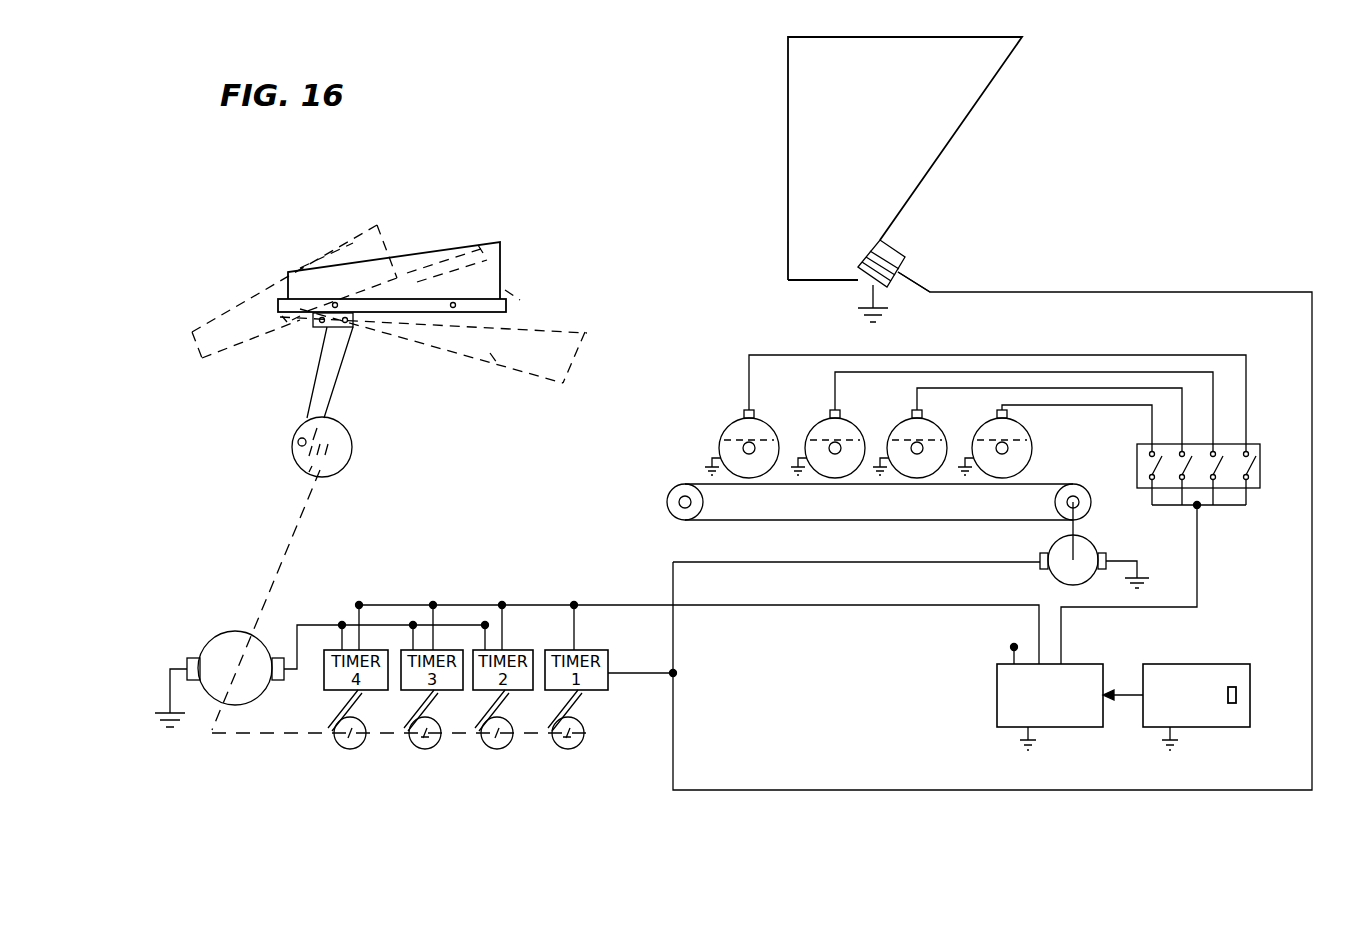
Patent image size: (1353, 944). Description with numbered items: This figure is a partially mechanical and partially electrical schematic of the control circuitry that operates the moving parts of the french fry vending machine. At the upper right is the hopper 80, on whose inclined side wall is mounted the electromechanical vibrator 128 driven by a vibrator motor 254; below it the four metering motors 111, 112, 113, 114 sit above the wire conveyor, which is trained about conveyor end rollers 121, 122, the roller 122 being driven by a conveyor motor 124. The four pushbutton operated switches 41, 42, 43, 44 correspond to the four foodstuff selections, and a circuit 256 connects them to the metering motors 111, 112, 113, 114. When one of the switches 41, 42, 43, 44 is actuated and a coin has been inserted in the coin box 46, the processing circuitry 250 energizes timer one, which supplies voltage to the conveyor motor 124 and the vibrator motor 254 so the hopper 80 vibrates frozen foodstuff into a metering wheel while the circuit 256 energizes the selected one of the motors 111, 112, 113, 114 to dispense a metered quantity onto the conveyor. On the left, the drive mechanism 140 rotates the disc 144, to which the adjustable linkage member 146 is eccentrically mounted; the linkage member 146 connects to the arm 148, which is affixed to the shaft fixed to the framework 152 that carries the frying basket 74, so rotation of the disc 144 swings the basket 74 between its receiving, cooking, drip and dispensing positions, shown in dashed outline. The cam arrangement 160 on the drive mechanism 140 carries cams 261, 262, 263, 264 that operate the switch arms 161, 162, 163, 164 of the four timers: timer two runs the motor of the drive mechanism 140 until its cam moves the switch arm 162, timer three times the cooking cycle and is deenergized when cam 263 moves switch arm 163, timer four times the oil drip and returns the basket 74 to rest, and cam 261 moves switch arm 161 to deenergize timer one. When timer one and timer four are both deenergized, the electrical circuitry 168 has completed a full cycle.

The frying basket 74 is at (505, 290).
The framework 152 is at (507, 306).
The arm 148 is at (323, 330).
The adjustable linkage member 146 is at (340, 370).
The disc 144 is at (352, 452).
The drive mechanism 140 is at (207, 650).
The cam arrangement 160 is at (286, 746).
The switch arm 164 is at (340, 702).
The cam 264 is at (338, 746).
The switch arm 163 is at (410, 705).
The cam 263 is at (426, 748).
The switch arm 162 is at (478, 706).
The cam 262 is at (497, 750).
The switch arm 161 is at (575, 702).
The cam 261 is at (573, 748).
The electrical circuitry 168 is at (662, 783).
The hopper 80 is at (947, 135).
The electromechanical vibrator 128 is at (906, 262).
The vibrator motor 254 is at (895, 246).
The motor 111 is at (730, 425).
The motor 112 is at (818, 426).
The motor 113 is at (900, 426).
The motor 114 is at (984, 426).
The conveyor end roller 121 is at (668, 512).
The conveyor end roller 122 is at (1087, 510).
The conveyor motor 124 is at (1057, 572).
The pushbutton operated switch 41 is at (1216, 489).
The pushbutton operated switch 42 is at (1225, 484).
The pushbutton operated switch 43 is at (1192, 483).
The pushbutton operated switch 44 is at (1162, 483).
The circuit 256 is at (1200, 582).
The processing circuitry 250 is at (1058, 730).
The coin box 46 is at (1226, 730).